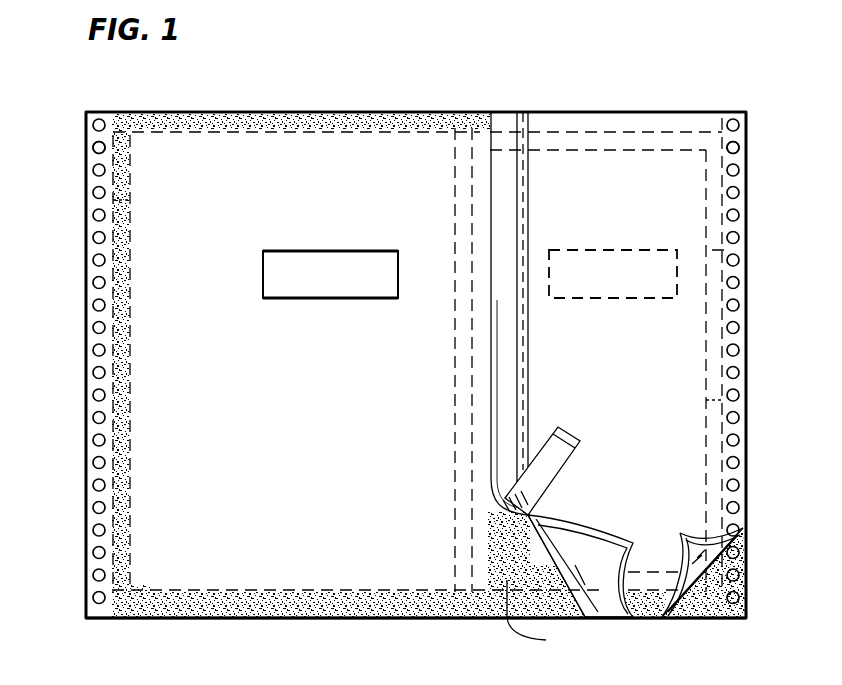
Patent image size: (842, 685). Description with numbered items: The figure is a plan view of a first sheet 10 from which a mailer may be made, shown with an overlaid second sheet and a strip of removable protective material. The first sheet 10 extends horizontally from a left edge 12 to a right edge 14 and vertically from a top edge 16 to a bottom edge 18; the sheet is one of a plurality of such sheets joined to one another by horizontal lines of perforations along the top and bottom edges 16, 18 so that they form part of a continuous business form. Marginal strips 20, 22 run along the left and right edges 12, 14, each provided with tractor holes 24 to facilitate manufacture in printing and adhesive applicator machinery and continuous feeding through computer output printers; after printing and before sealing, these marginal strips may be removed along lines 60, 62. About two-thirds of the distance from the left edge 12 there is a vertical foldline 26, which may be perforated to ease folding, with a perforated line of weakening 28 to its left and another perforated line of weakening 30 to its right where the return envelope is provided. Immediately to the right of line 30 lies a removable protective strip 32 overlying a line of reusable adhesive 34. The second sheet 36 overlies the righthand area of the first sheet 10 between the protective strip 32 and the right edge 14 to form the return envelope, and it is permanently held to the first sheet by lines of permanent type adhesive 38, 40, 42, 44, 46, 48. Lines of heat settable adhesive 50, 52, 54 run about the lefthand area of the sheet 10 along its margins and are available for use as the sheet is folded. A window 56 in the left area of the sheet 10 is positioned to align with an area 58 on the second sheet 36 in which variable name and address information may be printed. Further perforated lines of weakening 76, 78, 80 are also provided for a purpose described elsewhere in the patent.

The first sheet 10 is at (165, 182).
The left edge 12 is at (88, 385).
The right edge 14 is at (748, 284).
The top edge 16 is at (285, 116).
The bottom edge 18 is at (194, 612).
The marginal strip 20 is at (93, 272).
The marginal strip 22 is at (745, 362).
The tractor holes 24 is at (98, 150).
The vertical foldline 26 is at (472, 147).
The perforated line of weakening 28 is at (455, 154).
The perforated line of weakening 30 is at (500, 148).
The removable protective strip 32 is at (507, 162).
The line of reusable adhesive 34 is at (617, 590).
The second sheet 36 is at (681, 190).
The line of permanent type adhesive 38 is at (612, 619).
The line of permanent type adhesive 40 is at (740, 222).
The line of permanent type adhesive 42 is at (560, 583).
The line of permanent type adhesive 44 is at (730, 250).
The line of permanent type adhesive 46 is at (692, 134).
The line of permanent type adhesive 48 is at (668, 142).
The line of heat settable adhesive 50 is at (258, 602).
The line of heat settable adhesive 52 is at (117, 455).
The line of heat settable adhesive 54 is at (358, 126).
The window 56 is at (325, 275).
The area 58 is at (637, 292).
The line 60 is at (112, 406).
The line 62 is at (722, 402).
The perforated line of weakening 76 is at (248, 130).
The perforated line of weakening 78 is at (152, 592).
The perforated line of weakening 80 is at (128, 203).